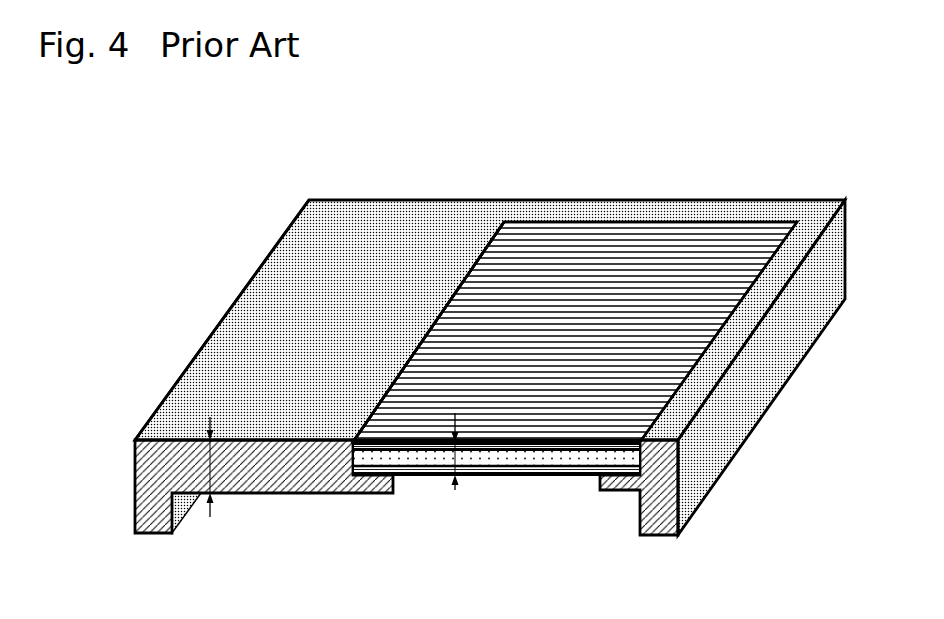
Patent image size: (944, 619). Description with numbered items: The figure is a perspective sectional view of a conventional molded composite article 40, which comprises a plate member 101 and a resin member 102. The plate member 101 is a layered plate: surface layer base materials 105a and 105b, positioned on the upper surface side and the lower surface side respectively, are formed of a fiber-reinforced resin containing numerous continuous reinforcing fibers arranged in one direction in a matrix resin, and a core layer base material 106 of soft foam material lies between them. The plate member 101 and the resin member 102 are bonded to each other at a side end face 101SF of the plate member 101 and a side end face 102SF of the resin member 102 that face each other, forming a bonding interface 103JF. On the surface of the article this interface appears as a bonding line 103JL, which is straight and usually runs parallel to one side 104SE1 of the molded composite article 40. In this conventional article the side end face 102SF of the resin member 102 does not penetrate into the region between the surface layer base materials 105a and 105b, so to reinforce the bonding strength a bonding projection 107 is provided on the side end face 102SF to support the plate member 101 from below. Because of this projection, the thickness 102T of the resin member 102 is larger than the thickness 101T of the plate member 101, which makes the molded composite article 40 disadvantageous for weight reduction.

The molded composite article 40 is at (526, 181).
The plate member 101 is at (660, 250).
The resin member 102 is at (390, 248).
The bonding interface 103JF is at (471, 274).
The bonding line 103JL is at (433, 310).
The one side of the molded composite article 104SE1 is at (210, 337).
The surface layer base material 105a is at (672, 277).
The surface layer base material 105b is at (562, 468).
The core layer base material 106 is at (532, 453).
The bonding projection 107 is at (367, 493).
The side end face of the plate member 101SF is at (340, 462).
The side end face of the resin member 102SF is at (381, 414).
The thickness of the plate member 101T is at (489, 470).
The thickness of the resin member 102T is at (210, 470).